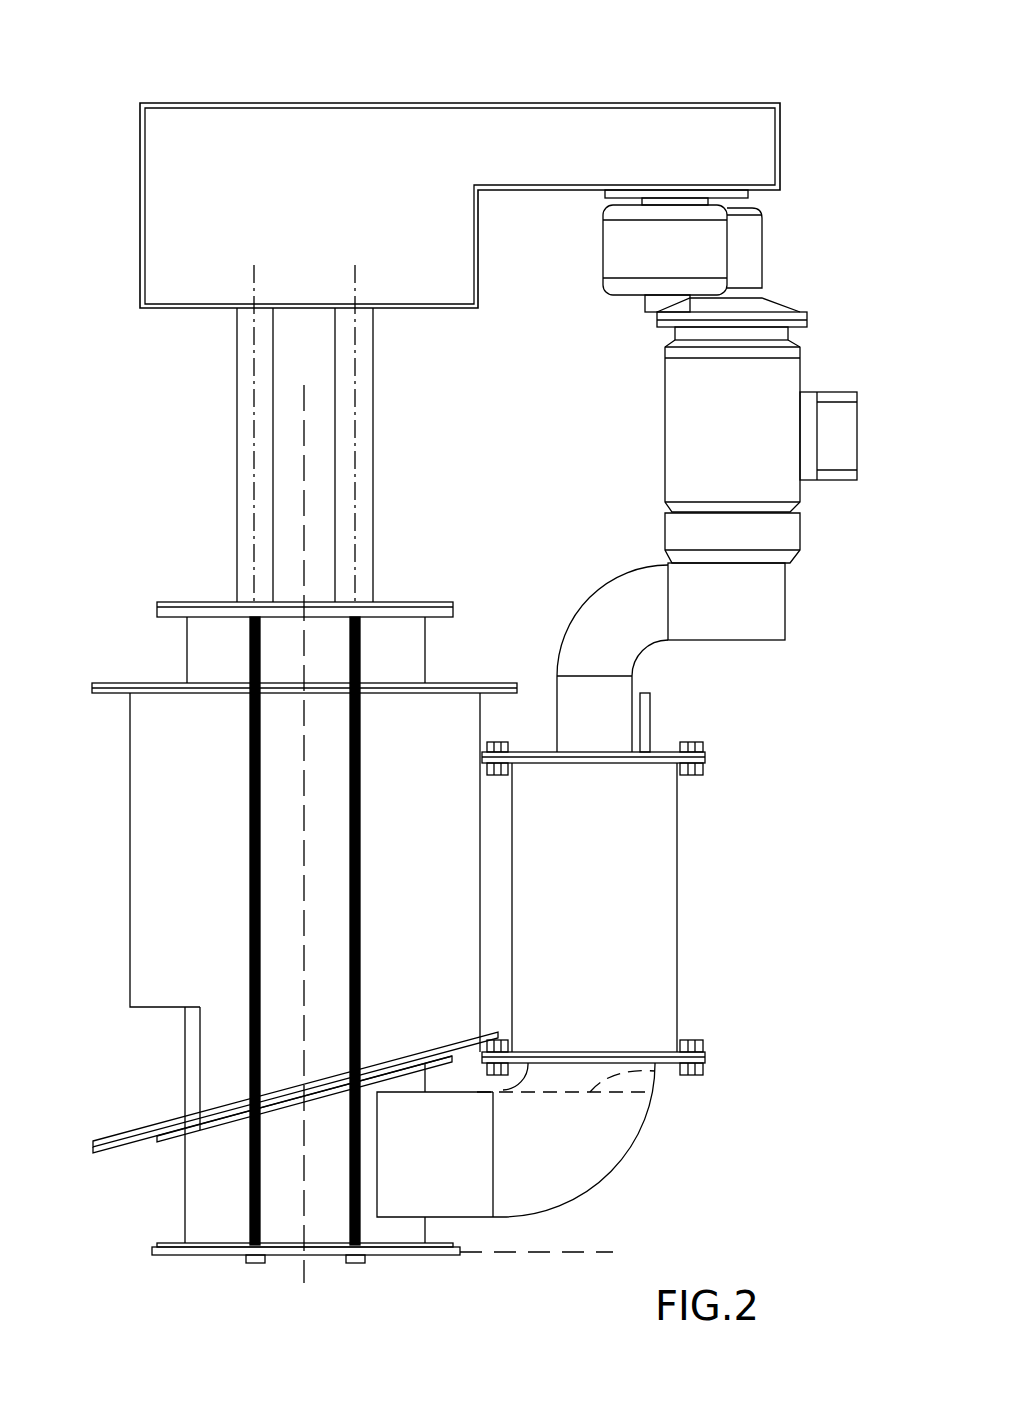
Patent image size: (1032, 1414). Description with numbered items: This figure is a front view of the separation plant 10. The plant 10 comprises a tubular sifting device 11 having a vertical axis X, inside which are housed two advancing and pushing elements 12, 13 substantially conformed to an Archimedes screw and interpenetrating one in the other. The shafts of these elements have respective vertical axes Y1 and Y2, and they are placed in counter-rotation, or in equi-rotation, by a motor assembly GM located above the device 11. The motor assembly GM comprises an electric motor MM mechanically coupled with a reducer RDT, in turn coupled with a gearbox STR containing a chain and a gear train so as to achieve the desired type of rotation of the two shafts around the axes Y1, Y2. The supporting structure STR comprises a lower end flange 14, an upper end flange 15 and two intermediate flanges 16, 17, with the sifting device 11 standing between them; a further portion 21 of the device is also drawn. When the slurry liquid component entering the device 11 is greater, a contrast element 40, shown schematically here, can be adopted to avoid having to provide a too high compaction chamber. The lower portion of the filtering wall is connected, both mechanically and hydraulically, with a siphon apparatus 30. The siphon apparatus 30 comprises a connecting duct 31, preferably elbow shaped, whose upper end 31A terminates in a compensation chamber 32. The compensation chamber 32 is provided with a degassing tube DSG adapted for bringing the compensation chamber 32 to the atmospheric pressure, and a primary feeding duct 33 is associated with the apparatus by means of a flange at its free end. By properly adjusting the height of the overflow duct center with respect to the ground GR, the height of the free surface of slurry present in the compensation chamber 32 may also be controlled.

The motor assembly GM is at (510, 78).
The gearbox STR is at (668, 135).
The reducer RDT is at (623, 265).
The electric motor MM is at (775, 477).
The vertical axis Y1 is at (252, 338).
The vertical axis Y2 is at (357, 336).
The vertical axis X is at (310, 1268).
The separation plant 10 is at (250, 455).
The advancing and pushing element 12 is at (245, 547).
The advancing and pushing element 13 is at (365, 575).
The contrast element 40 is at (412, 596).
The upper end flange 15 is at (448, 600).
The intermediate flange 17 is at (497, 683).
The outer tube 21 is at (130, 838).
The tubular sifting device 11 is at (197, 1052).
The intermediate flange 16 is at (130, 1133).
The lower end flange 14 is at (420, 1255).
The ground GR is at (570, 1300).
The primary feeding duct 33 is at (717, 633).
The degassing tube DSG is at (645, 718).
The siphon apparatus 30 is at (712, 1020).
The compensation chamber 32 is at (612, 940).
The connecting duct 31 is at (655, 1105).
The upper end 31A is at (655, 1071).